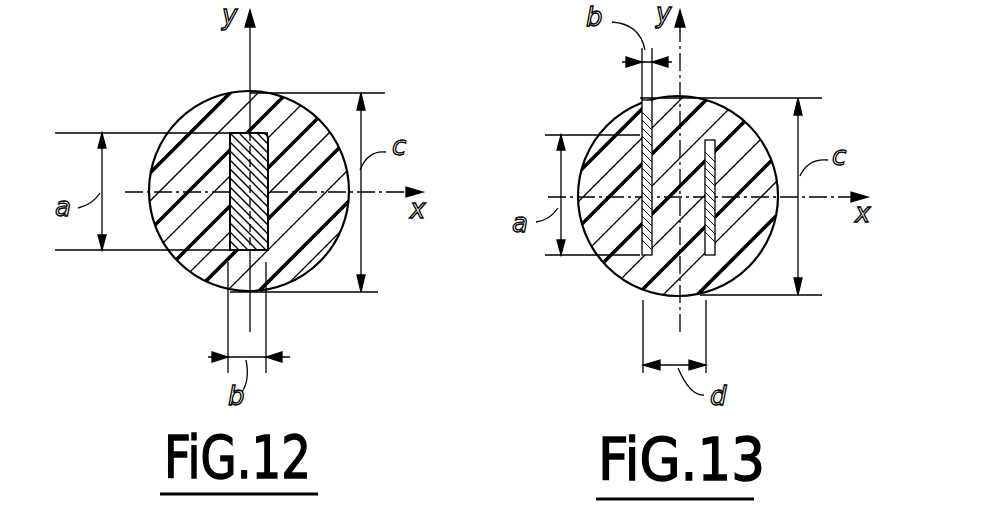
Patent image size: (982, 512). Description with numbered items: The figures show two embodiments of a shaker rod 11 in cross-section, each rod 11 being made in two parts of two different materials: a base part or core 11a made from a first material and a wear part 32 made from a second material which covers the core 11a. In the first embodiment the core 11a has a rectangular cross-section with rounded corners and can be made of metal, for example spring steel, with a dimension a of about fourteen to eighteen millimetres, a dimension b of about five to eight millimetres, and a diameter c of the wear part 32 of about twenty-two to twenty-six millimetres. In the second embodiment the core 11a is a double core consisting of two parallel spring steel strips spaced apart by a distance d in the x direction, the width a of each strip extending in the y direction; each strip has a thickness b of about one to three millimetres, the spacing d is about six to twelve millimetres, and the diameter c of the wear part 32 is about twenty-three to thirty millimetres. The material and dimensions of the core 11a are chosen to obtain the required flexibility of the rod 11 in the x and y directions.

In FIG. 12, the shaker rod 11 is at (257, 193).
In FIG. 13, the shaker rod 11 is at (676, 197).
In FIG. 12, the core 11a is at (245, 232).
In FIG. 13, the core 11a is at (640, 260).
In FIG. 12, the wear part 32 is at (300, 252).
In FIG. 13, the wear part 32 is at (733, 247).